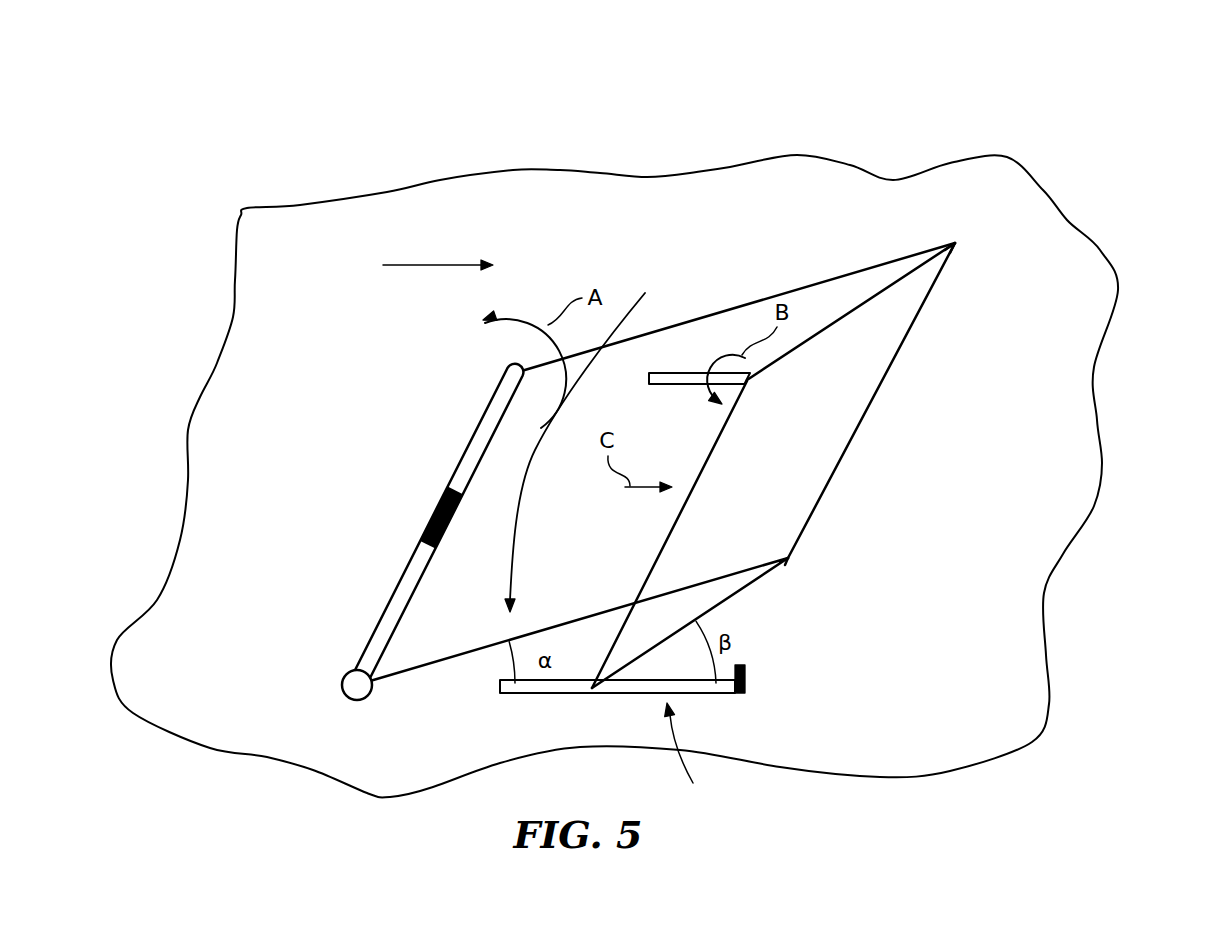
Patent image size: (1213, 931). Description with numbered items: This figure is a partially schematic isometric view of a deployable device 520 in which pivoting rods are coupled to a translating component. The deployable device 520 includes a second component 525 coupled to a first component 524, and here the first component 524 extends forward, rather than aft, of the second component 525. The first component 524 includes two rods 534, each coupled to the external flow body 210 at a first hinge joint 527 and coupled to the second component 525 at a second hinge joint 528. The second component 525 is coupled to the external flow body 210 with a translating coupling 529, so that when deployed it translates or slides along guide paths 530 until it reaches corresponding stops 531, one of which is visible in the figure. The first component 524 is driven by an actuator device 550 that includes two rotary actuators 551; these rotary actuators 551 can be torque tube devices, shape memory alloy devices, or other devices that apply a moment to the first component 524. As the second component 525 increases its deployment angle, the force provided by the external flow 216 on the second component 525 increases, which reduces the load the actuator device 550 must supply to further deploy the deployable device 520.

The external flow body 210 is at (1080, 434).
The external flow 216 is at (440, 265).
The deployable device 520 is at (520, 120).
The first component 524 is at (656, 323).
The second component 525 is at (805, 413).
The first hinge joint 527 is at (510, 368).
The second hinge joint 528 is at (955, 243).
The translating coupling 529 is at (701, 749).
The guide path 530 is at (688, 378).
The stop 531 is at (746, 672).
The rod 534 is at (852, 266).
The actuator device 550 is at (388, 474).
The rotary actuator 551 is at (467, 442).